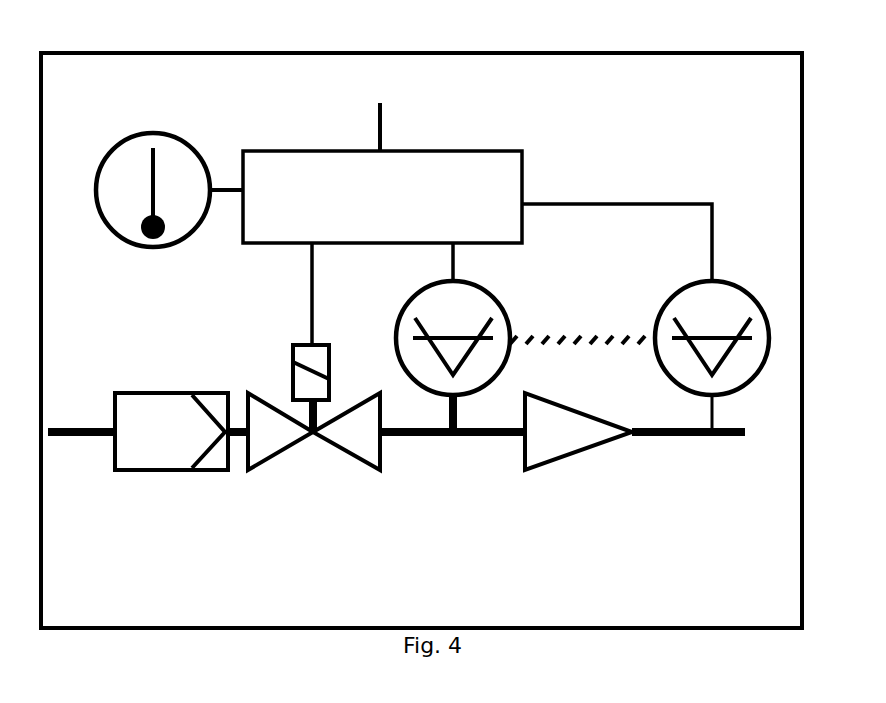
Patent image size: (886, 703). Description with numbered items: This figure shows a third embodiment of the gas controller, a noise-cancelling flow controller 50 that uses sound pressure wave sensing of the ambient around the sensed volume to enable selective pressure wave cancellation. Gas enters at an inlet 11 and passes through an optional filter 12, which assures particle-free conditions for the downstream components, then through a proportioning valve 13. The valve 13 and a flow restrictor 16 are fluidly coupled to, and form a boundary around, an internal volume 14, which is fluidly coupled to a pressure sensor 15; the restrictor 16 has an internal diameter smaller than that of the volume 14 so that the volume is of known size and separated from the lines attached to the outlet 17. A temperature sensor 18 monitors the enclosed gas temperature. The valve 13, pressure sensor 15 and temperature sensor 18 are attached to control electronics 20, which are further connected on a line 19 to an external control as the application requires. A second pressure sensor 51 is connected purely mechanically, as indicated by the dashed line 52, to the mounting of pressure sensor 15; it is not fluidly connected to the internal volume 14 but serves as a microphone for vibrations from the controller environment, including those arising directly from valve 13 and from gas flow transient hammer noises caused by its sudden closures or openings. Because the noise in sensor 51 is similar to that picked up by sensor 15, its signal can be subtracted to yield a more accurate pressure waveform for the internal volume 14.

The noise-cancelling flow controller 50 is at (242, 52).
The temperature sensor 18 is at (153, 133).
The line 19 is at (375, 122).
The control electronics 20 is at (453, 150).
The inlet 11 is at (65, 437).
The filter 12 is at (203, 470).
The valve 13 is at (323, 437).
The internal volume 14 is at (437, 437).
The pressure sensor 15 is at (478, 395).
The flow restrictor 16 is at (593, 455).
The outlet 17 is at (658, 437).
The pressure sensor 51 is at (685, 395).
The dashed line 52 is at (540, 335).